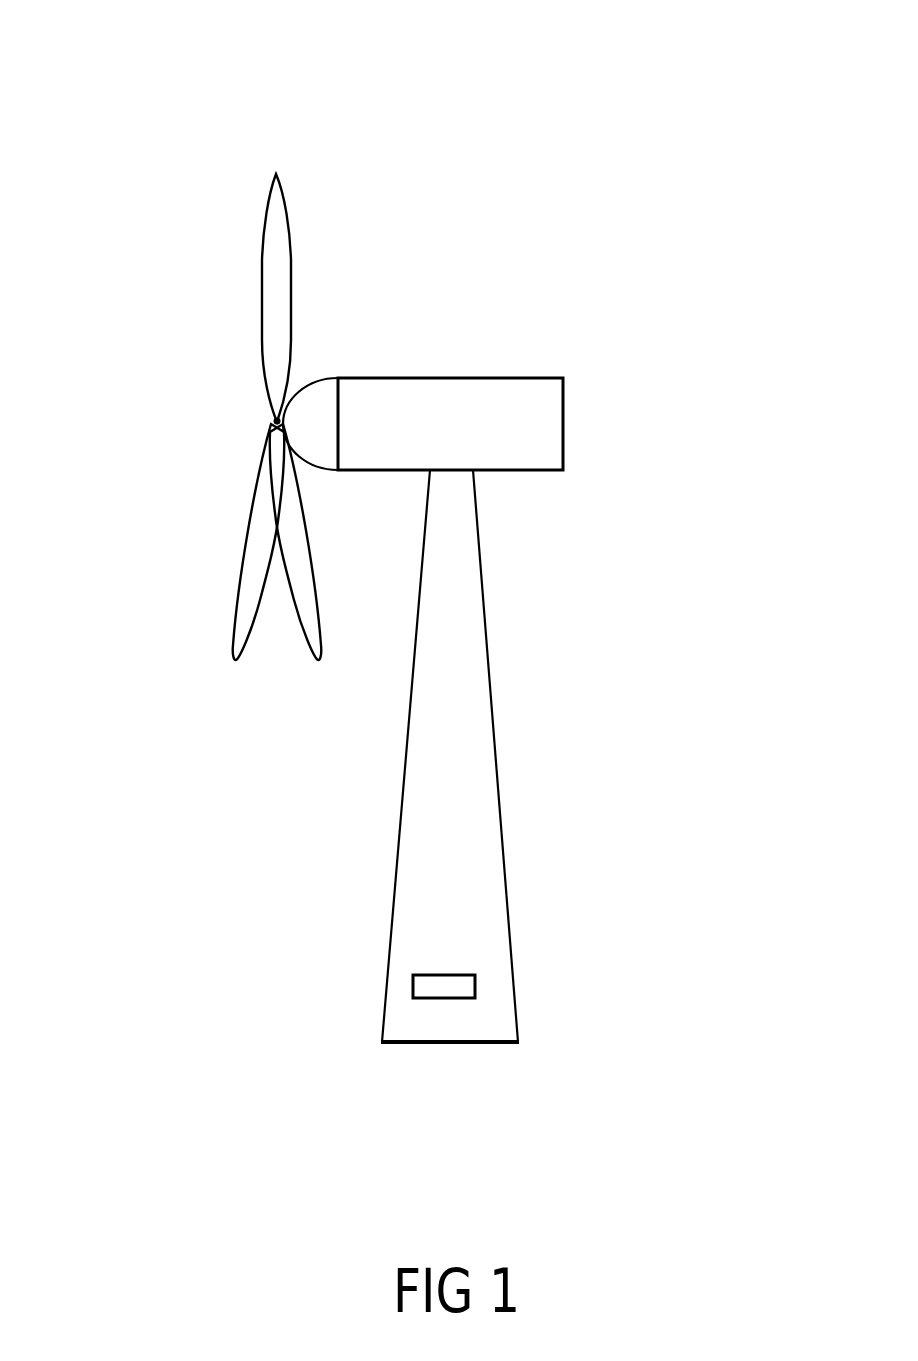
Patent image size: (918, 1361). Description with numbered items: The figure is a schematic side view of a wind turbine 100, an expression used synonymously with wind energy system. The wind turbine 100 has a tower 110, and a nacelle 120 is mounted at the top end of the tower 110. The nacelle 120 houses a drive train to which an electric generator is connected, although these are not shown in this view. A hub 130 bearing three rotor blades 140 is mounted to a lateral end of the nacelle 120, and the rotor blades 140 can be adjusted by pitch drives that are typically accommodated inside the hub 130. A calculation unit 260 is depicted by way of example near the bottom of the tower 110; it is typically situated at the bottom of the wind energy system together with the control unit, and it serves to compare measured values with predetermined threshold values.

The wind turbine 100 is at (522, 22).
The tower 110 is at (503, 792).
The nacelle 120 is at (565, 410).
The hub 130 is at (323, 380).
The rotor blades 140 is at (262, 320).
The calculation unit 260 is at (442, 1000).